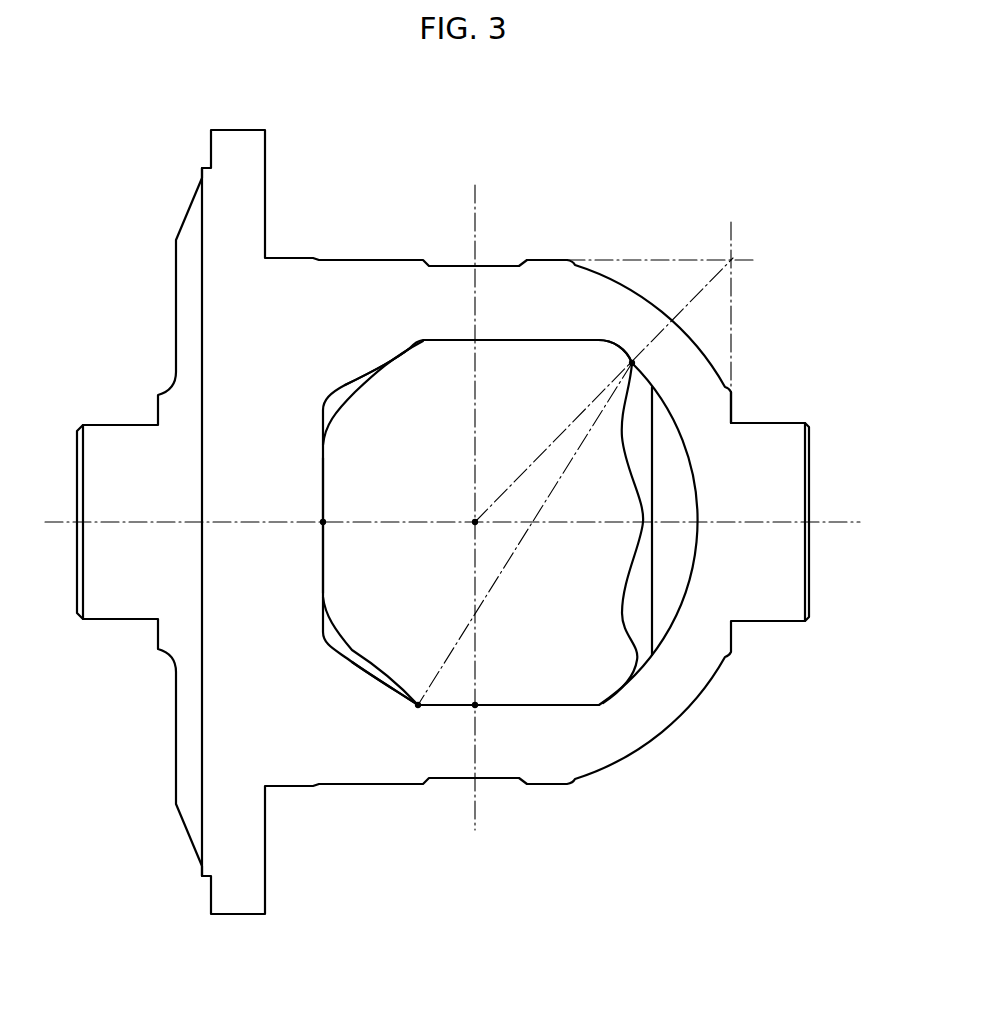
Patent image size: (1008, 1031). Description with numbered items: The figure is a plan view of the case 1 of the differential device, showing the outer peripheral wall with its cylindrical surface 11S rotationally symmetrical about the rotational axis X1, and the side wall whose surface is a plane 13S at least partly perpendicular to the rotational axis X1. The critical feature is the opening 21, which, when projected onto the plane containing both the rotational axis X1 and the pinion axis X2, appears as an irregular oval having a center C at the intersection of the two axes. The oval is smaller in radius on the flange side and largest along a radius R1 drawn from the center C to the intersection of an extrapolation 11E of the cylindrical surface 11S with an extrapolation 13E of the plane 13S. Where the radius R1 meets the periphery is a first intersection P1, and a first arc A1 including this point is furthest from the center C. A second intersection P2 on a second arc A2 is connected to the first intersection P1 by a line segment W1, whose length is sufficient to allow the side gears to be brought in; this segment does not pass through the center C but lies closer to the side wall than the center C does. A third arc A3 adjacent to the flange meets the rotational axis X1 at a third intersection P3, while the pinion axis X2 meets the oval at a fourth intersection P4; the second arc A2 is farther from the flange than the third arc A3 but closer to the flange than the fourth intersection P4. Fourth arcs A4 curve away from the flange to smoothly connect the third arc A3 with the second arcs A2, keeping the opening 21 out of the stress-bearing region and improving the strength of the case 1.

The case 1 is at (603, 130).
The opening 21 is at (512, 706).
The rotational axis X1 is at (832, 518).
The pinion axis X2 is at (475, 210).
The cylindrical surface 11S is at (550, 258).
The extrapolation of the cylindrical surface 11E is at (655, 258).
The plane 13S is at (732, 401).
The extrapolation of the side surface 13E is at (732, 332).
The radius R1 is at (560, 437).
The line segment W1 is at (522, 540).
The center C is at (475, 522).
The first intersection P1 is at (634, 365).
The second intersection P2 is at (420, 708).
The third intersection P3 is at (325, 521).
The fourth intersection P4 is at (476, 703).
The first arc A1 is at (657, 358).
The second arc A2 is at (357, 700).
The third arc A3 is at (315, 593).
The fourth arcs A4 is at (352, 362).